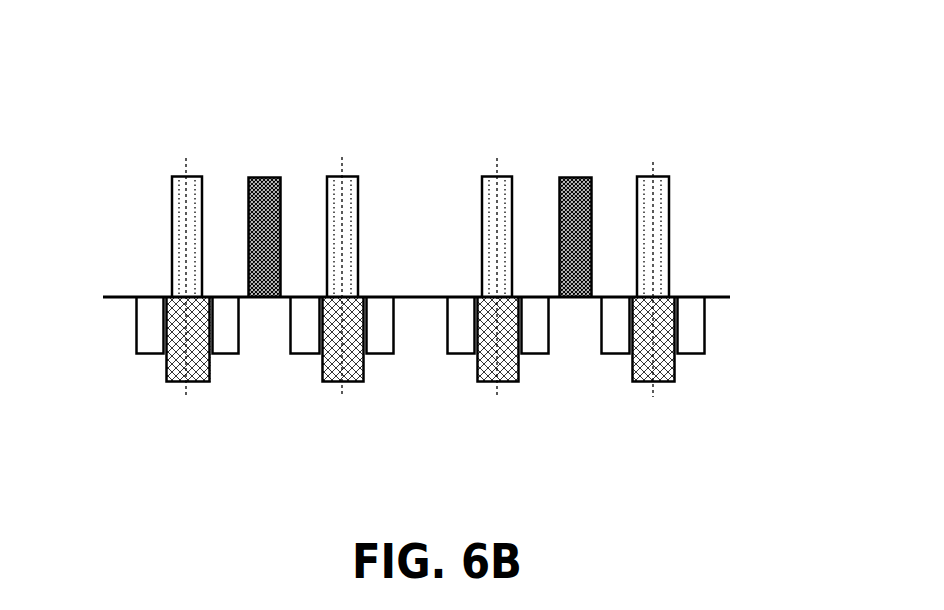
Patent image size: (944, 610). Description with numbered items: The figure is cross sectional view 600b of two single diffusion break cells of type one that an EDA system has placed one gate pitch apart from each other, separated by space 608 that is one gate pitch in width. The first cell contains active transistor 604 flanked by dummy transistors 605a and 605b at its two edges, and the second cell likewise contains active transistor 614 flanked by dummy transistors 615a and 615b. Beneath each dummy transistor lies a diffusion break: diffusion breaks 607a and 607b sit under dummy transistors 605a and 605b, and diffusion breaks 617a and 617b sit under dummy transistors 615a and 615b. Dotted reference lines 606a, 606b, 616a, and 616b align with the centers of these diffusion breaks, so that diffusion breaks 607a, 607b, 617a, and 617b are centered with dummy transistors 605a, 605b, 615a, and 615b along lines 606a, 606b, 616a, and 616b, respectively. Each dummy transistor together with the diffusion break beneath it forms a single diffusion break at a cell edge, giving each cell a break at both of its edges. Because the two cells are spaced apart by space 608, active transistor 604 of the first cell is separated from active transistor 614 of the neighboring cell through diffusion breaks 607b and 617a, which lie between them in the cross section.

The cross sectional view 600b is at (465, 31).
The active transistor 604 is at (255, 176).
The dummy transistor 605a is at (178, 176).
The dummy transistor 605b is at (355, 178).
The reference line 606a is at (186, 158).
The reference line 606b is at (342, 157).
The diffusion break 607a is at (178, 365).
The diffusion break 607b is at (349, 375).
The space 608 is at (418, 283).
The active transistor 614 is at (568, 176).
The dummy transistor 615a is at (488, 193).
The dummy transistor 615b is at (662, 180).
The reference line 616a is at (497, 158).
The reference line 616b is at (653, 162).
The diffusion break 617a is at (488, 367).
The diffusion break 617b is at (658, 372).